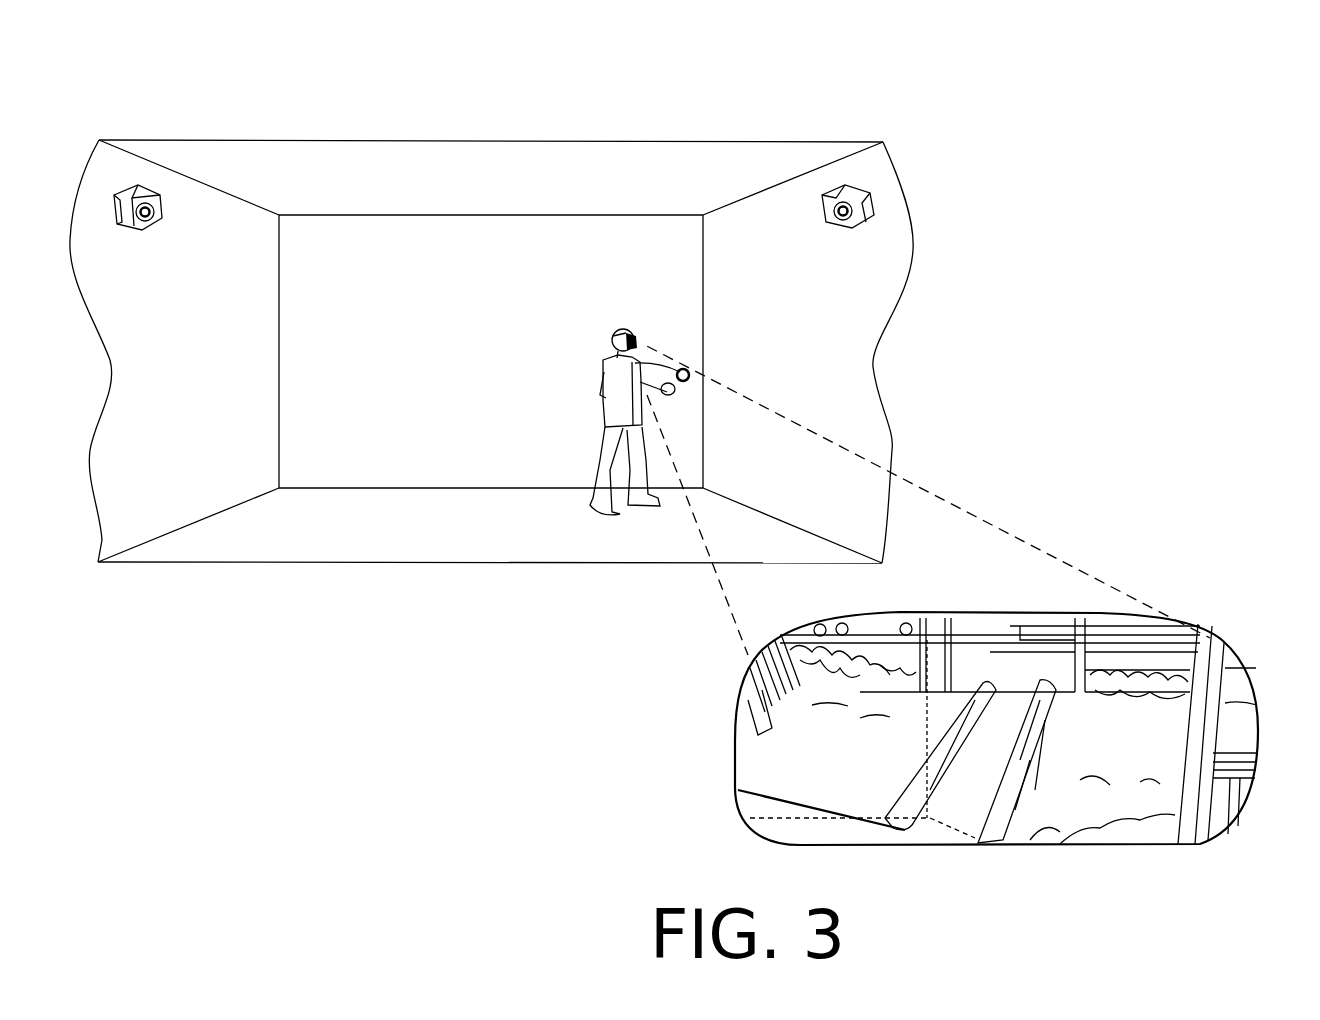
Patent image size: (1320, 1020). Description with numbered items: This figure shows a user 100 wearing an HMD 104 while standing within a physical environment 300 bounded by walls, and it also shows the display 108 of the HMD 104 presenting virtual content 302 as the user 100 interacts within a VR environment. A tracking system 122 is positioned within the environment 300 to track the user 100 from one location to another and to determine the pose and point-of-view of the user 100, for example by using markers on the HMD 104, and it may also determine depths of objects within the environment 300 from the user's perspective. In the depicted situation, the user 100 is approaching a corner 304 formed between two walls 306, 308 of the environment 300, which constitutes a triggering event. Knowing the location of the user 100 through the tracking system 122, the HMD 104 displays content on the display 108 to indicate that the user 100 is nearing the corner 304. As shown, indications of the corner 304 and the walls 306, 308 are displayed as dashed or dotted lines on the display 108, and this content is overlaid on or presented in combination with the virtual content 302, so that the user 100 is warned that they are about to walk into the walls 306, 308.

The environment 300 is at (172, 85).
The tracking system 122 is at (115, 193).
The corner 304 is at (700, 224).
The wall 306 is at (608, 265).
The wall 308 is at (783, 263).
The user 100 is at (605, 366).
The HMD 104 is at (611, 331).
The virtual content 302 is at (1222, 614).
The display 108 is at (1023, 881).